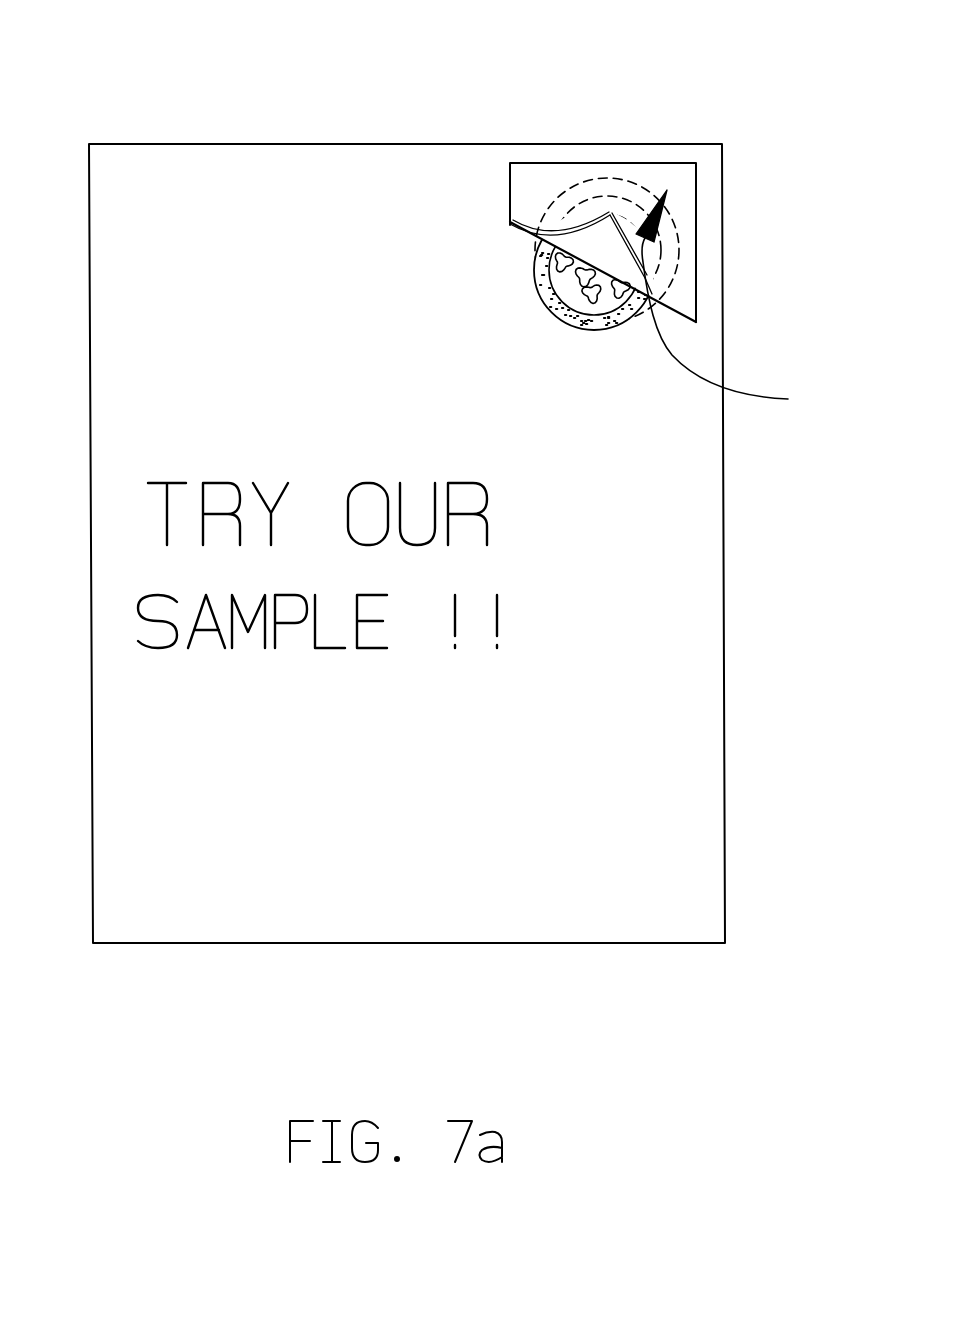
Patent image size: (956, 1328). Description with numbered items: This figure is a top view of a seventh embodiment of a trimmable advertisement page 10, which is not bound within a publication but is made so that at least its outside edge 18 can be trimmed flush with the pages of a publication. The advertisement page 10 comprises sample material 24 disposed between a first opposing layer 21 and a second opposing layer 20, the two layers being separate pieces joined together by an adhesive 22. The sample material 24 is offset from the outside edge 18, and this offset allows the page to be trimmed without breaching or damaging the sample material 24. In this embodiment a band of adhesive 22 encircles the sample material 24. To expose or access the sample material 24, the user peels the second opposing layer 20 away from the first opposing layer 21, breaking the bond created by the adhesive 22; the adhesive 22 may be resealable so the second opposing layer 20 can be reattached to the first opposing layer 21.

The advertisement page 10 is at (177, 97).
The outside edge 18 is at (723, 609).
The second opposing layer 20 is at (603, 178).
The first opposing layer 21 is at (193, 252).
The adhesive 22 is at (620, 325).
The sample material 24 is at (547, 257).